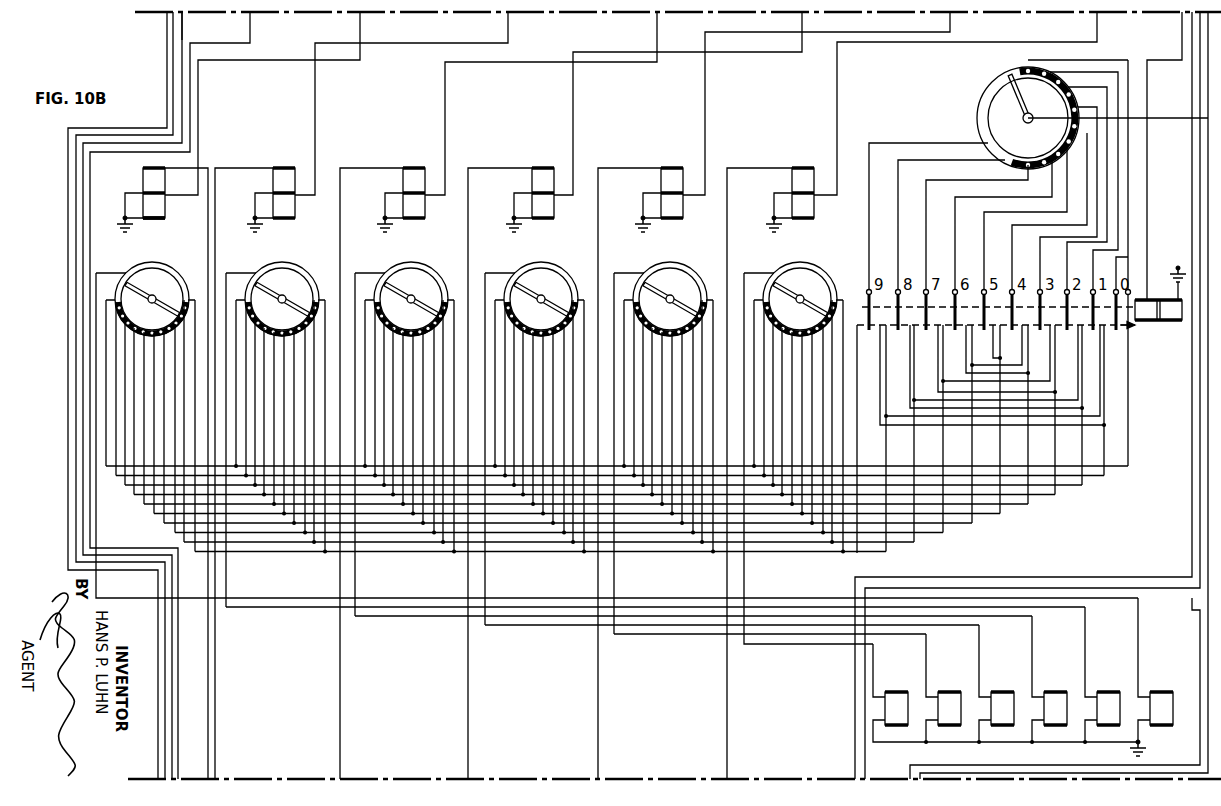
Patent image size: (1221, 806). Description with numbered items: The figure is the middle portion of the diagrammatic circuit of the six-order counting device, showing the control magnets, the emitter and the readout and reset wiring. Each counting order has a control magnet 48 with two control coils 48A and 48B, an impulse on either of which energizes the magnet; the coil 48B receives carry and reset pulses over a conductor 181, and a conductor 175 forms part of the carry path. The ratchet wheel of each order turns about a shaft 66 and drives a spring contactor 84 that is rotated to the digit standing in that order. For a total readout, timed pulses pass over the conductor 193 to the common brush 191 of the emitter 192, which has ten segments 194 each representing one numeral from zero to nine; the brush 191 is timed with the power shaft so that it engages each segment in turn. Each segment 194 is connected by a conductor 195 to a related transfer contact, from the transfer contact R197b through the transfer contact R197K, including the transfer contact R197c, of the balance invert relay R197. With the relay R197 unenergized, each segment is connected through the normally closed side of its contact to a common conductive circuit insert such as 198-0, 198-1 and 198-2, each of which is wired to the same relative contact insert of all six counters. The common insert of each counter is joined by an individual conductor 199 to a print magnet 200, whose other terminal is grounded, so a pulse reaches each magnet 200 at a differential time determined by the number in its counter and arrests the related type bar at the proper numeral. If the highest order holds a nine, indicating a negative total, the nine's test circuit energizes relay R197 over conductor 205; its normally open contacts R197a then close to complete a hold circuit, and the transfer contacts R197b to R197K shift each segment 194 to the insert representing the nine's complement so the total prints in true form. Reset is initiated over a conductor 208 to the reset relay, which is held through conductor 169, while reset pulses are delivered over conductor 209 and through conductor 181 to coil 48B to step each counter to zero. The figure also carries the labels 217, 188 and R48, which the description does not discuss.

The conductor line 217 is at (182, 31).
The conductor 208 is at (88, 172).
The conductor line 188 is at (68, 258).
The conductor 169 is at (90, 338).
The control magnet 48 is at (600, 133).
The control coil 48A is at (165, 205).
The carry coil 48B is at (143, 170).
The relay R48 is at (158, 222).
The shaft 66 is at (470, 444).
The spring contactor 84 is at (840, 262).
The conductor 195 is at (869, 246).
The transfer contact R197K is at (881, 295).
The transfer contact R197c is at (1102, 295).
The balance invert relay R197 is at (1130, 326).
The normally open contacts R197a is at (1148, 350).
The transfer contact R197b is at (1128, 292).
The segment 194 is at (1028, 62).
The emitter 192 is at (993, 118).
The common brush 191 is at (1010, 98).
The conductor 175 is at (1192, 80).
The conductor 209 is at (1200, 192).
The conductor 193 is at (1208, 222).
The common conductive circuit insert 198-0 is at (1096, 481).
The common conductive circuit insert 198-1 is at (1082, 507).
The common conductive circuit insert 198-2 is at (1060, 529).
The conductor 199 is at (738, 578).
The conductor 181 is at (208, 700).
The conductor 205 is at (1208, 640).
The print magnet 200 is at (1158, 692).